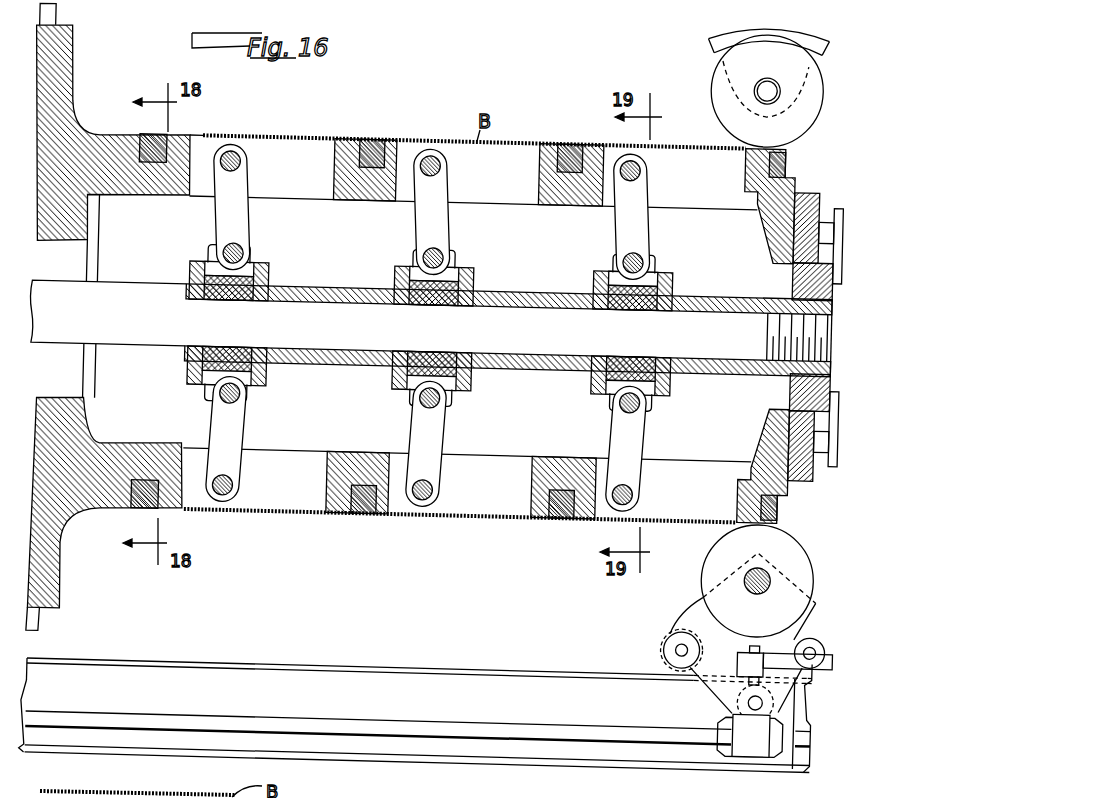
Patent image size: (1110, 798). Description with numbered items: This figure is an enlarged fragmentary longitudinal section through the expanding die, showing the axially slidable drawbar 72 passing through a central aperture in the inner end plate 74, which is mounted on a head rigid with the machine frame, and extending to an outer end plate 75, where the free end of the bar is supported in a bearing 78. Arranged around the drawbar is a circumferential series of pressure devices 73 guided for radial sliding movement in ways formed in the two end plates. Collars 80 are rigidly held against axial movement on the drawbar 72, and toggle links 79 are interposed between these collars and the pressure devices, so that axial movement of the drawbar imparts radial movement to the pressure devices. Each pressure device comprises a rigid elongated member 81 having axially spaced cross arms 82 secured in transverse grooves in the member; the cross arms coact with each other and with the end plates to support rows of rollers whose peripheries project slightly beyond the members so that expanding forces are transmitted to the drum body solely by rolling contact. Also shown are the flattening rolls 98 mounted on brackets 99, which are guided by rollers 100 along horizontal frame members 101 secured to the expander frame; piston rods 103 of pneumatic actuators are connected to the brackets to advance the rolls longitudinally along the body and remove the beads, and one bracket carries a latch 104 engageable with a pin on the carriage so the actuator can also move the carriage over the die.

The drawbar 72 is at (125, 296).
The pressure devices 73 is at (190, 139).
The end plate 74 is at (42, 626).
The end plate 75 is at (812, 197).
The bearing 78 is at (798, 289).
The toggle links 79 is at (243, 224).
The collars 80 is at (197, 268).
The elongated members 81 is at (351, 201).
The cross arms 82 is at (152, 136).
The flattening rolls 98 is at (720, 97).
The brackets 99 is at (718, 51).
The rollers 100 is at (672, 638).
The horizontal frame members 101 is at (537, 680).
The piston rods 103 is at (533, 724).
The latch 104 is at (784, 664).